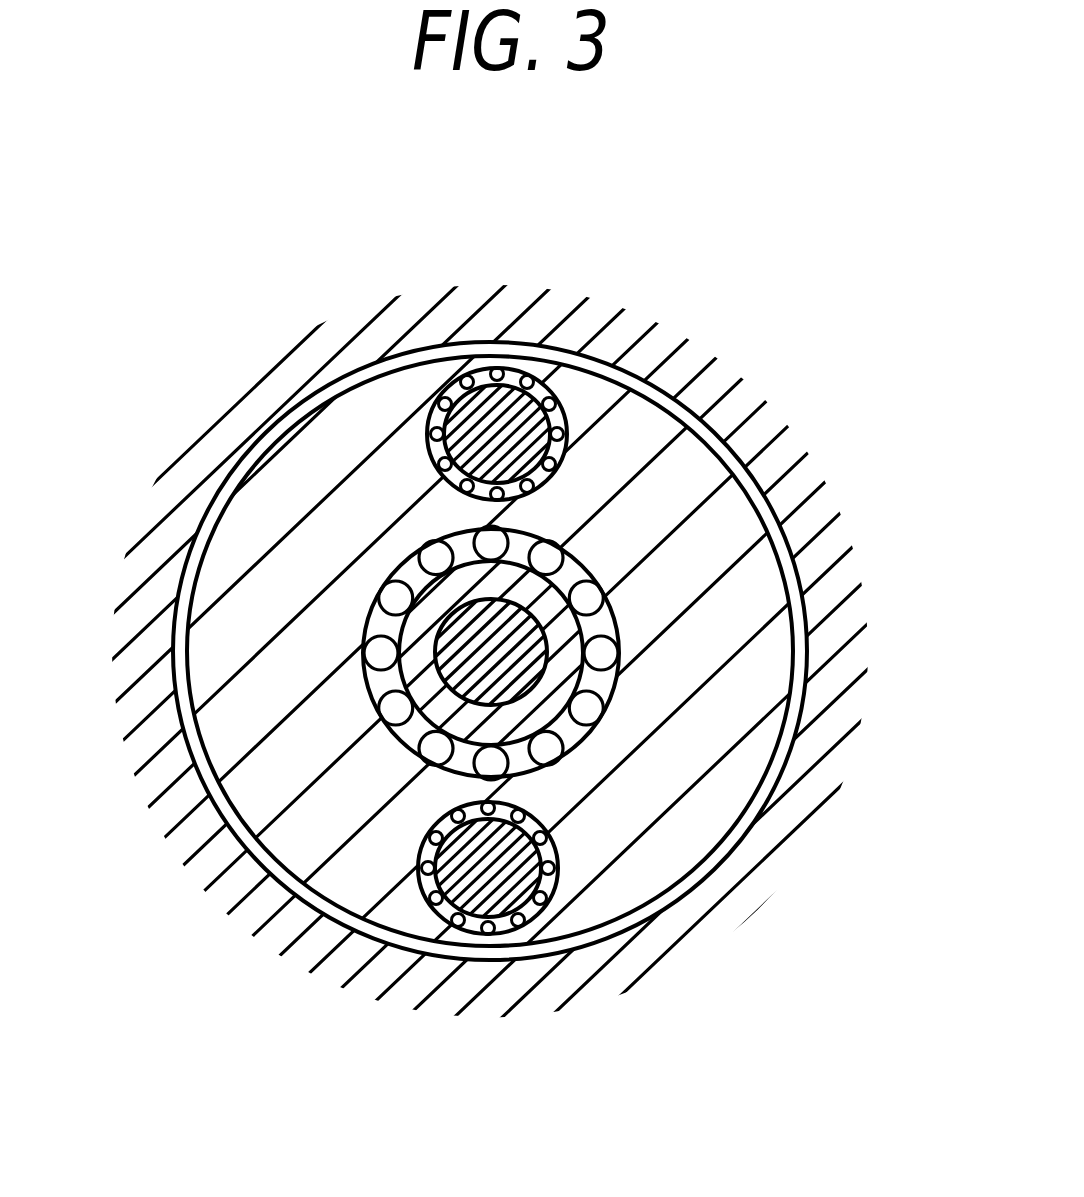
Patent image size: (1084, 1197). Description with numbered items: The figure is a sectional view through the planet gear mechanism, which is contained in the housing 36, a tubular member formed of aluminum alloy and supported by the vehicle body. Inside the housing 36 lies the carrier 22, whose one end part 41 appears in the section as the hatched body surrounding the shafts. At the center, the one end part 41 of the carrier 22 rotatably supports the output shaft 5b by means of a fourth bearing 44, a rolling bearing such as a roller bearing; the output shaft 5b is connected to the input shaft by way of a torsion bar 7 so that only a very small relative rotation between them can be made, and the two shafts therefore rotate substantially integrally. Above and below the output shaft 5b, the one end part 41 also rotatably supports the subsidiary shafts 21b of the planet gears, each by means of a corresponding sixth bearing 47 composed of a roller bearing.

The carrier 22 is at (804, 604).
The housing 36 is at (698, 440).
The one end part 41 is at (283, 480).
The fourth bearing 44 is at (363, 650).
The output shaft 5b is at (428, 677).
The torsion bar 7 is at (523, 678).
The sixth bearings 47 is at (532, 374).
The subsidiary shafts 21b is at (488, 410).